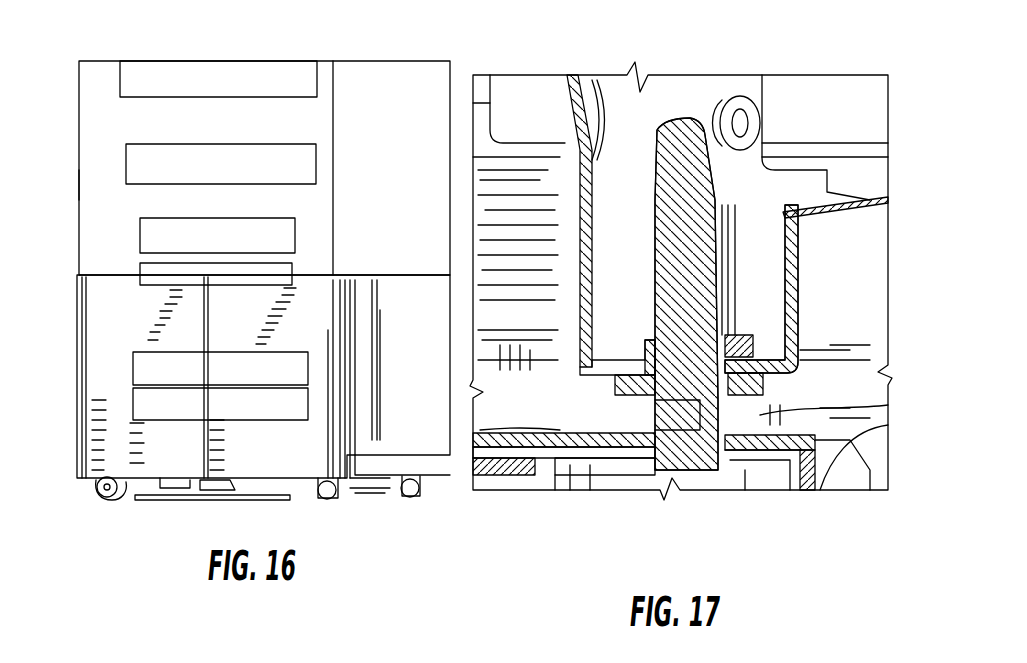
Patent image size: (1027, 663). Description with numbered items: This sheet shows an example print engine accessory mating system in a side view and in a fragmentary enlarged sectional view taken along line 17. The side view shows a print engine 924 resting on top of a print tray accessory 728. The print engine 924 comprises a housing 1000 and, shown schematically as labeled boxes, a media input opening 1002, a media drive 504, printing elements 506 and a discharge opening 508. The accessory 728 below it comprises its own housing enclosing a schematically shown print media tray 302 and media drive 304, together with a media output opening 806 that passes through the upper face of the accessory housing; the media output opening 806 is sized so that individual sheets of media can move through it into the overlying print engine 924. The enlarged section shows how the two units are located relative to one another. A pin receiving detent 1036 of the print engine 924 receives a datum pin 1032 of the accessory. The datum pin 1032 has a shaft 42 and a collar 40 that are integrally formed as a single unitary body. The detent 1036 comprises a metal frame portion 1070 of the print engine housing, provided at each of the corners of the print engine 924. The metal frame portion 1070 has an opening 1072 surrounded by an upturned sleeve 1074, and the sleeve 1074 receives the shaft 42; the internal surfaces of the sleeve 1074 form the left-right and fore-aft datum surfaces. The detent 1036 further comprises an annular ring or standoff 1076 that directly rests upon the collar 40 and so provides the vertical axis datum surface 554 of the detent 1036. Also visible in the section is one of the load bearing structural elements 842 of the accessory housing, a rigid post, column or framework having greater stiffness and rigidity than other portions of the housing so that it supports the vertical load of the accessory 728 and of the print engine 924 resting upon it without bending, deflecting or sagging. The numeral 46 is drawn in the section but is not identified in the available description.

In FIG. 16, the print engine 924 is at (77, 103).
In FIG. 17, the print engine 924 is at (888, 95).
In FIG. 16, the discharge opening 508 is at (322, 72).
In FIG. 16, the printing elements 506 is at (195, 144).
In FIG. 16, the media drive 504 is at (228, 218).
In FIG. 16, the housing 1000 is at (79, 184).
In FIG. 16, the media input opening 1002 is at (140, 266).
In FIG. 16, the media output opening 806 is at (140, 285).
In FIG. 16, the media drive 304 is at (133, 362).
In FIG. 16, the print media tray 302 is at (133, 400).
In FIG. 16, the print tray accessory 728 is at (77, 443).
In FIG. 16, the section line 17- 17 is at (349, 258).
In FIG. 17, the pin receiving detent 1036 is at (638, 330).
In FIG. 17, the metal frame portion 1070 is at (868, 200).
In FIG. 17, the shaft 42 is at (710, 262).
In FIG. 17, the datum pin 1032 is at (735, 290).
In FIG. 17, the upturned sleeve 1074 is at (752, 348).
In FIG. 17, the opening 1072 is at (640, 360).
In FIG. 17, the annular ring or standoff 1076 is at (640, 395).
In FIG. 17, the vertical axis datum surface 554 is at (660, 398).
In FIG. 17, the support bar 46 is at (740, 400).
In FIG. 17, the load bearing structural element 842 is at (825, 470).
In FIG. 17, the collar 40 is at (760, 420).